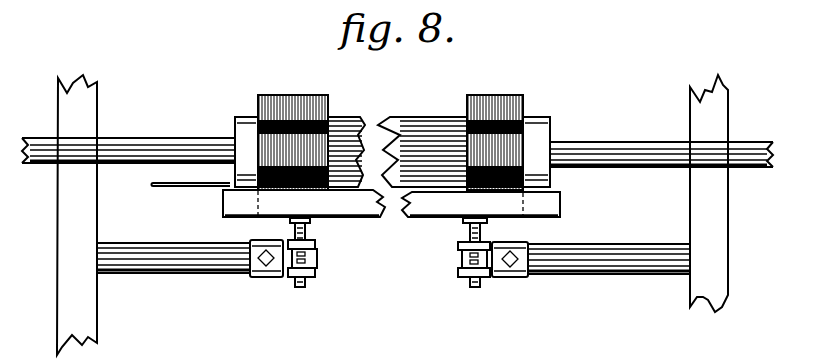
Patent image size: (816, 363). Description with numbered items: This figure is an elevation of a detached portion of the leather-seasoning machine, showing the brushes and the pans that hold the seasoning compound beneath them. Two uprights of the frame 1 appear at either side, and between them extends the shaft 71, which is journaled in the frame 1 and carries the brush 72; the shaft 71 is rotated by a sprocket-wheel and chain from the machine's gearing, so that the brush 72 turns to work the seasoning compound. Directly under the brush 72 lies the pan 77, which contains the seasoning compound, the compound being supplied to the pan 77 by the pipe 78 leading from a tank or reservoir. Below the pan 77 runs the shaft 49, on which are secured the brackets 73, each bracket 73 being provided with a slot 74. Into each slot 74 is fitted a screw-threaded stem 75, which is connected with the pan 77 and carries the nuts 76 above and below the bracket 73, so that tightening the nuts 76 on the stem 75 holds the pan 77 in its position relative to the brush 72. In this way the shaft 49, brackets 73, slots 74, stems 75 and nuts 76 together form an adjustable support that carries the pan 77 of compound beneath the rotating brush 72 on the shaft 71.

The frame 1 is at (391, 215).
The shaft 49 is at (137, 252).
The shaft 71 is at (150, 147).
The brush 72 is at (392, 130).
The bracket 73 is at (282, 275).
The slot 74 is at (307, 258).
The screw-threaded stem 75 is at (302, 288).
The nut 76 is at (315, 245).
The pan 77 is at (433, 200).
The pipe 78 is at (200, 186).